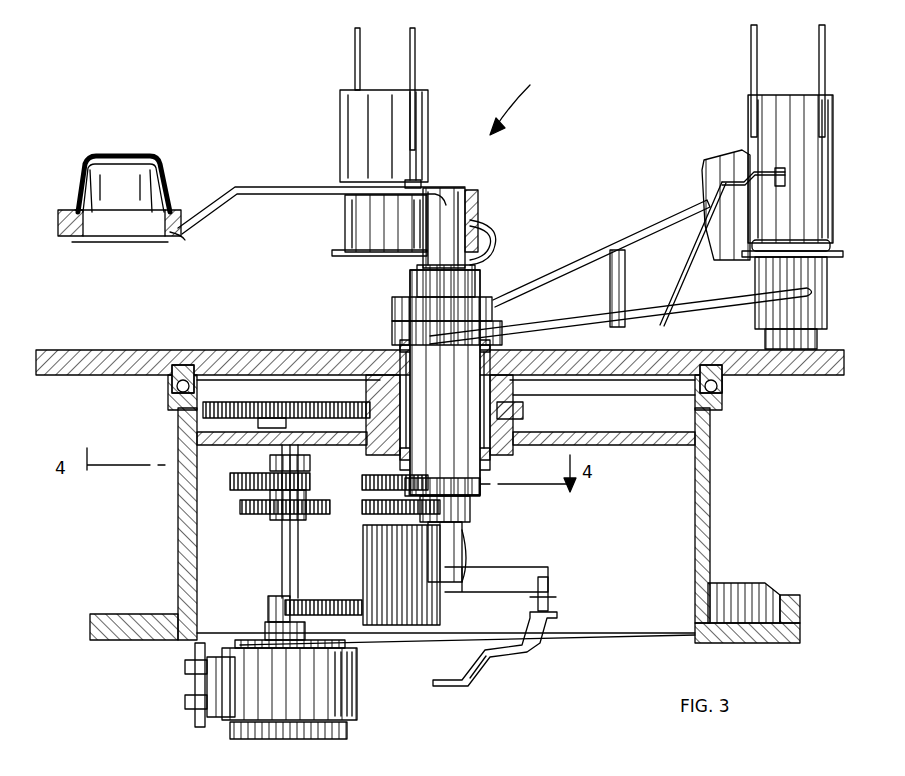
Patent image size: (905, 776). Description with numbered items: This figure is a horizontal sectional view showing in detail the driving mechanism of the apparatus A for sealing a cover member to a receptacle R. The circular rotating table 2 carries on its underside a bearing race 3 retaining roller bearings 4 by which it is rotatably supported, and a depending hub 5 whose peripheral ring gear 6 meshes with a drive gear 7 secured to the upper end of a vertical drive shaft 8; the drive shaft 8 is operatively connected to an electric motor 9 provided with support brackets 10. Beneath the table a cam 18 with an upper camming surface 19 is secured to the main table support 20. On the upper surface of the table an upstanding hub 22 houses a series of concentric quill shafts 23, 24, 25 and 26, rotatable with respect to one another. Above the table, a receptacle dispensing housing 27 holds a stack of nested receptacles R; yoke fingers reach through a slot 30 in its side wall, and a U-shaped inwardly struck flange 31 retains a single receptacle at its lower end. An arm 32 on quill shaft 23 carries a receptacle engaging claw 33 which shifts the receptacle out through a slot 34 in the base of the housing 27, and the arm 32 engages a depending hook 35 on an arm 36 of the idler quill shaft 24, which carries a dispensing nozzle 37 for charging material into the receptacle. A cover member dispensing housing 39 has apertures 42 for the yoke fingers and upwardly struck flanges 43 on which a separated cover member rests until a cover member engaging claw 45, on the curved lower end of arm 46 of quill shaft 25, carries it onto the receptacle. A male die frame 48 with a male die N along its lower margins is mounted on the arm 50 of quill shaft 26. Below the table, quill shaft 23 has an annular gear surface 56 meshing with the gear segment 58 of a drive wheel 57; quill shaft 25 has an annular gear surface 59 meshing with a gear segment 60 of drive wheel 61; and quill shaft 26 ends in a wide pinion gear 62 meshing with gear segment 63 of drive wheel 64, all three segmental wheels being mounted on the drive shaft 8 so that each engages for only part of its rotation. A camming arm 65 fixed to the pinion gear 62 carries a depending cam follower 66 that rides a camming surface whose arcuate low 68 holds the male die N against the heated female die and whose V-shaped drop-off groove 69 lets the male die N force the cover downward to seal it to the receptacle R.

The rotating table 2 is at (106, 350).
The bearing race 3 is at (178, 365).
The roller bearings 4 is at (188, 380).
The depending hub 5 is at (523, 402).
The ring gear 6 is at (523, 412).
The drive gear 7 is at (265, 400).
The drive shaft 8 is at (280, 552).
The electric motor 9 is at (347, 735).
The support brackets 10 is at (198, 730).
The cam 18 is at (762, 583).
The upper camming surface 19 is at (790, 595).
The main table support 20 is at (710, 528).
The upstanding hub 22 is at (398, 352).
The quill shaft 23 is at (463, 385).
The quill shaft 24 is at (395, 312).
The quill shaft 25 is at (472, 513).
The quill shaft 26 is at (465, 556).
The receptacle dispensing housing 27 is at (833, 135).
The slot 30 is at (790, 175).
The inwardly struck flange 31 is at (845, 253).
The arm 32 is at (688, 314).
The receptacle engaging claw 33 is at (828, 292).
The slot 34 is at (805, 240).
The depending hook 35 is at (596, 288).
The arm 36 is at (628, 237).
The dispensing nozzle 37 is at (705, 230).
The cover member dispensing housing 39 is at (428, 125).
The apertures 42 is at (345, 222).
The upwardly struck flanges 43 is at (332, 252).
The cover member engaging claw 45 is at (471, 192).
The arm 46 is at (492, 247).
The male die frame 48 is at (160, 160).
The arm 50 is at (248, 180).
The annular gear surface 56 is at (362, 482).
The drive wheel 57 is at (272, 465).
The gear segment 58 is at (230, 481).
The annular gear surface 59 is at (362, 510).
The gear segment 60 is at (240, 508).
The drive wheel 61 is at (272, 515).
The pinion gear 62 is at (405, 625).
The gear segment 63 is at (350, 600).
The drive wheel 64 is at (312, 600).
The camming arm 65 is at (530, 567).
The cam follower 66 is at (556, 605).
The low 68 is at (535, 650).
The drop-off groove 69 is at (478, 670).
The apparatus A is at (519, 99).
The male die N is at (183, 240).
The receptacle R is at (818, 342).